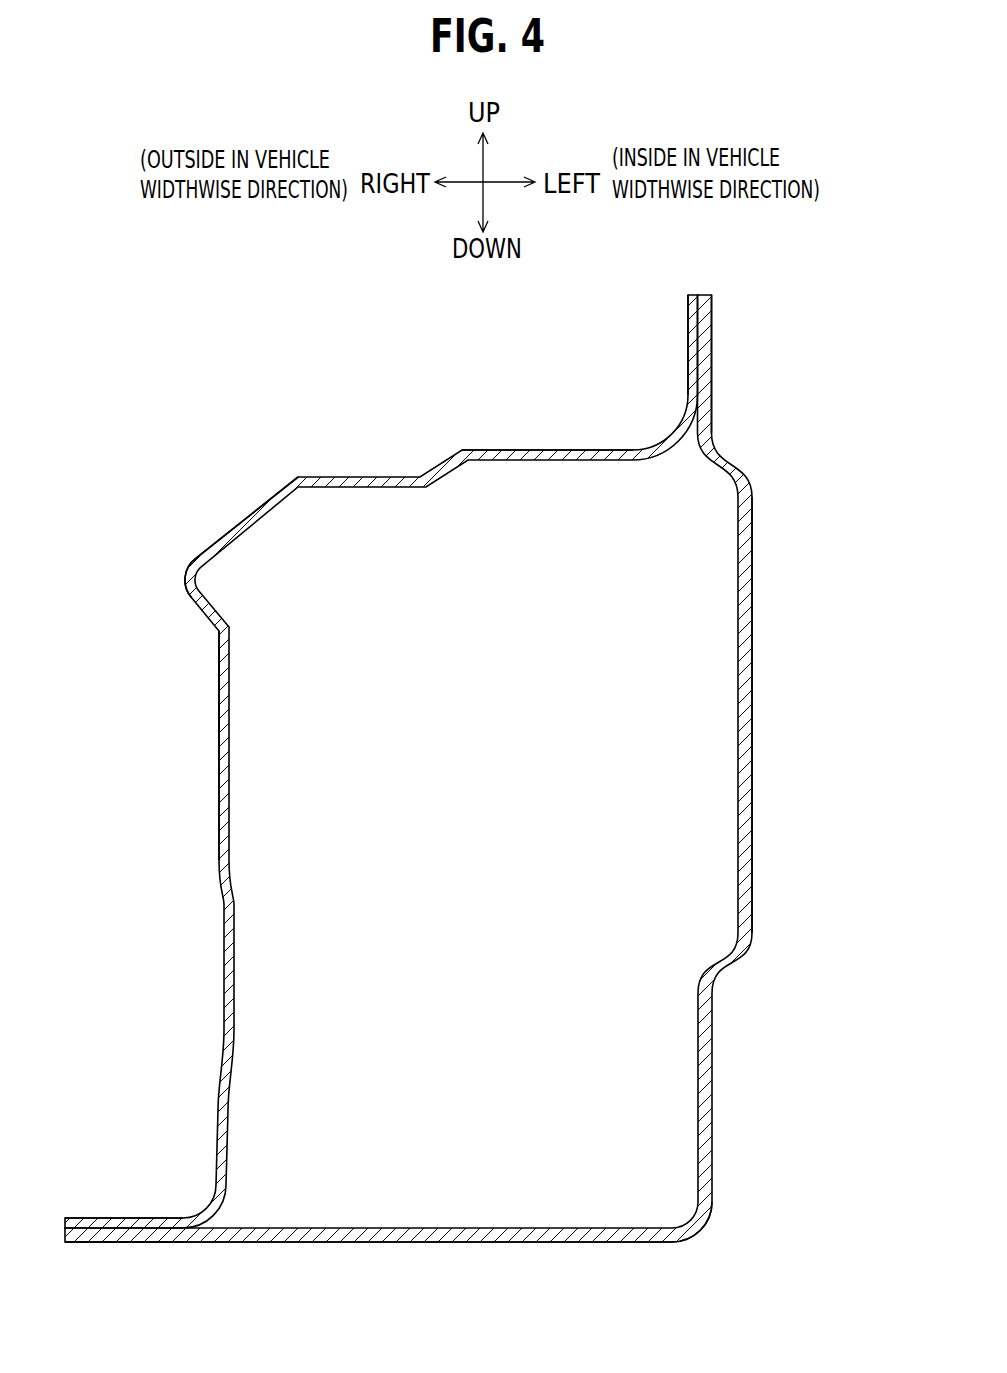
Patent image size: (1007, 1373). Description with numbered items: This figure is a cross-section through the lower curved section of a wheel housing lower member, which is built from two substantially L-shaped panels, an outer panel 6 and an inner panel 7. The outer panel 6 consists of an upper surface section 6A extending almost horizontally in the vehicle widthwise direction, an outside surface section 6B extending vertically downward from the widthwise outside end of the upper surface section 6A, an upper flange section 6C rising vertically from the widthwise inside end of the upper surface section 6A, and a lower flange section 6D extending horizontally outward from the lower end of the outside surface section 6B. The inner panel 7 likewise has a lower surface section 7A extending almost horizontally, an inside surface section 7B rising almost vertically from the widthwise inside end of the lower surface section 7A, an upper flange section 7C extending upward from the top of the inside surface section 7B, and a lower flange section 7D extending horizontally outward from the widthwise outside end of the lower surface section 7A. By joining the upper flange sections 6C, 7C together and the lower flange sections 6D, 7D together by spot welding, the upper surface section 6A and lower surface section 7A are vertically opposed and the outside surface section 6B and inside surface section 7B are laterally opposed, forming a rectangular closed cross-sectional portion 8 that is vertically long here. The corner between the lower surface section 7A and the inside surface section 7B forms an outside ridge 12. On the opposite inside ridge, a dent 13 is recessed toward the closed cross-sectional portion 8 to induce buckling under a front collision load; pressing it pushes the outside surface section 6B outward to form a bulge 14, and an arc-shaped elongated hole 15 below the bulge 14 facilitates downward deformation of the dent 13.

The outer panel 6 is at (287, 451).
The upper surface section 6A is at (550, 450).
The outside surface section 6B is at (219, 823).
The upper flange section 6C is at (688, 345).
The lower flange section 6D is at (131, 1218).
The inner panel 7 is at (783, 556).
The lower surface section 7A is at (428, 1242).
The inside surface section 7B is at (753, 712).
The upper flange section 7C is at (712, 370).
The lower flange section 7D is at (131, 1242).
The rectangular closed cross-sectional portion 8 is at (487, 825).
The outside ridge 12 is at (701, 1232).
The dent 13 is at (245, 514).
The bulge 14 is at (186, 577).
The elongated hole 15 is at (219, 700).